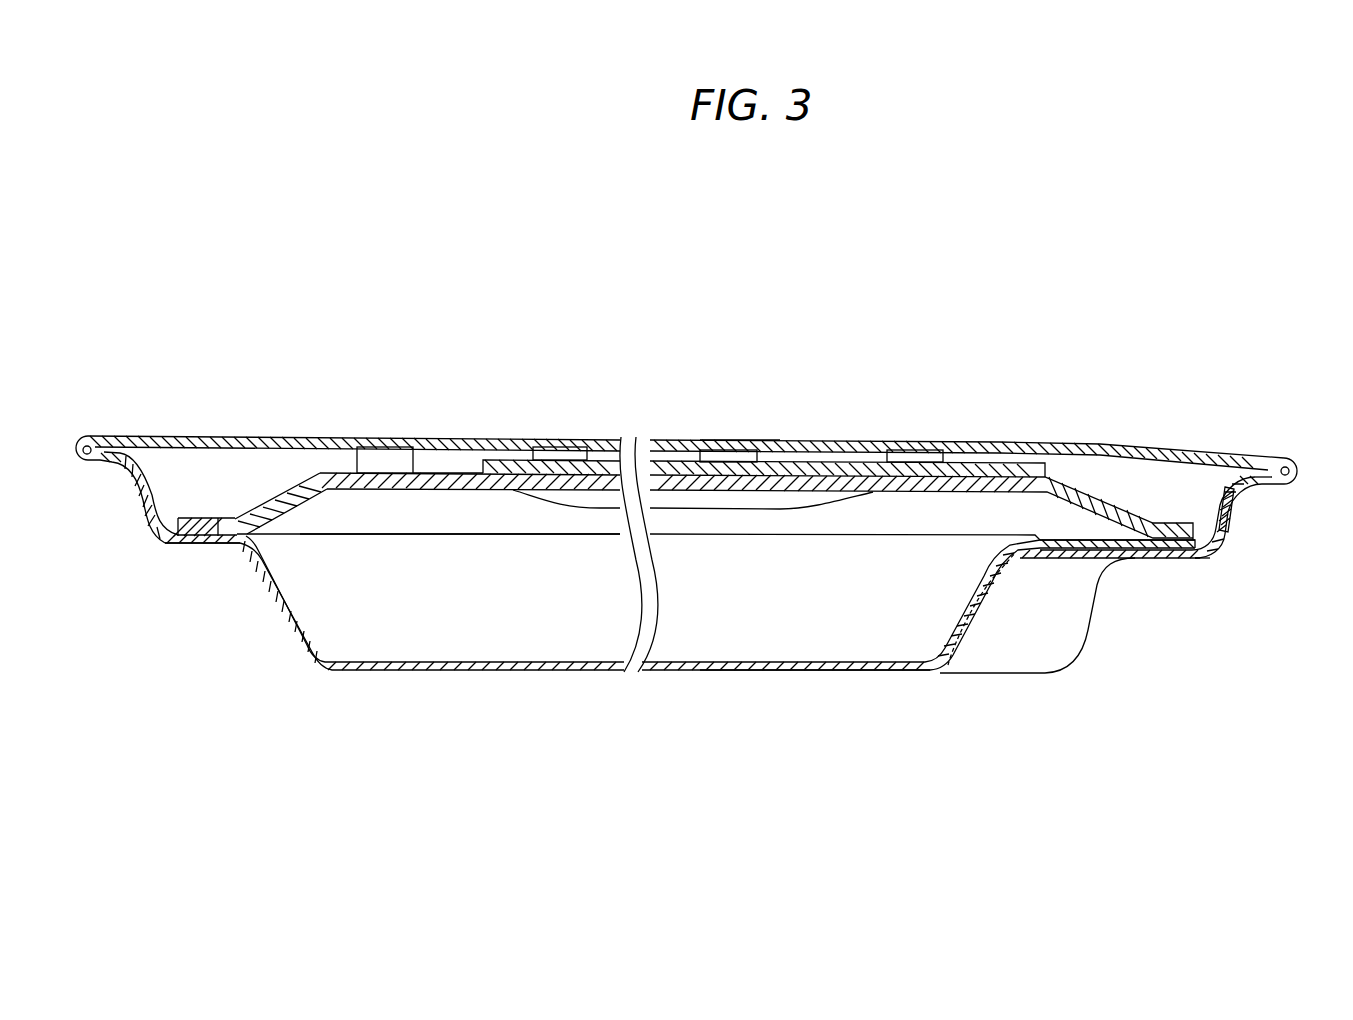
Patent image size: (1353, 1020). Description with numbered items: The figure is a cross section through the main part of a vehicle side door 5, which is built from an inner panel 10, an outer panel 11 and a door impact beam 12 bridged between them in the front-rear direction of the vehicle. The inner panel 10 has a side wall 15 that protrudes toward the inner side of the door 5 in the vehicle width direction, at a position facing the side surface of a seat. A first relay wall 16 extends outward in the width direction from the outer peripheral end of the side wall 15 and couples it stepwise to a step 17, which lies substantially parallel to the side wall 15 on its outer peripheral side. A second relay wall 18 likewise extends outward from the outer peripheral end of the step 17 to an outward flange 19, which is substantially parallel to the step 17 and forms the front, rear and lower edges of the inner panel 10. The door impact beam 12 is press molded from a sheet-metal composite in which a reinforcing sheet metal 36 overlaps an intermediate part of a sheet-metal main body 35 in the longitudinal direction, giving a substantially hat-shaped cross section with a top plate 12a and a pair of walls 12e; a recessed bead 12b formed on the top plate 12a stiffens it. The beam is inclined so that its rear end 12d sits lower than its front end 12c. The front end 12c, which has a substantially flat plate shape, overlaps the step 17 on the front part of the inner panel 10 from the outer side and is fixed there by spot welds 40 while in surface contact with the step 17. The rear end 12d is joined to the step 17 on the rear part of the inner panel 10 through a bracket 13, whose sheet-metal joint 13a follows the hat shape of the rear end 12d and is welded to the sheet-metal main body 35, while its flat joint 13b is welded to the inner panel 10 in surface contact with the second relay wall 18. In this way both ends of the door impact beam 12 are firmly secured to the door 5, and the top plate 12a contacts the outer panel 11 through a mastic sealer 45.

The door 5 is at (583, 720).
The inner panel 10 is at (680, 683).
The outer panel 11 is at (734, 438).
The door impact beam 12 is at (810, 480).
The top plate 12a is at (440, 470).
The recessed bead 12b is at (720, 500).
The front end 12c is at (217, 540).
The rear end 12d is at (1180, 532).
The walls 12e is at (467, 514).
The bracket 13 is at (1212, 552).
The sheet-metal joint 13a is at (1137, 560).
The joint 13b is at (1233, 532).
The side wall 15 is at (835, 663).
The first relay wall 16 is at (967, 620).
The step 17 is at (148, 544).
The second relay wall 18 is at (149, 493).
The outward flange 19 is at (88, 436).
The sheet-metal main body 35 is at (1044, 482).
The reinforcing sheet metal 36 is at (968, 461).
The spot welds 40 is at (197, 518).
The mastic sealer 45 is at (352, 461).